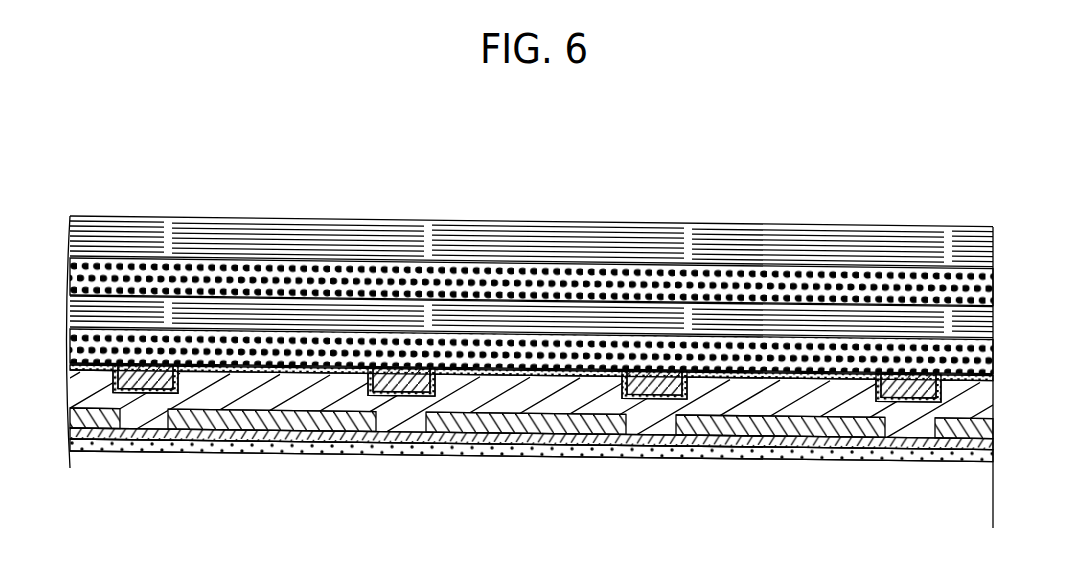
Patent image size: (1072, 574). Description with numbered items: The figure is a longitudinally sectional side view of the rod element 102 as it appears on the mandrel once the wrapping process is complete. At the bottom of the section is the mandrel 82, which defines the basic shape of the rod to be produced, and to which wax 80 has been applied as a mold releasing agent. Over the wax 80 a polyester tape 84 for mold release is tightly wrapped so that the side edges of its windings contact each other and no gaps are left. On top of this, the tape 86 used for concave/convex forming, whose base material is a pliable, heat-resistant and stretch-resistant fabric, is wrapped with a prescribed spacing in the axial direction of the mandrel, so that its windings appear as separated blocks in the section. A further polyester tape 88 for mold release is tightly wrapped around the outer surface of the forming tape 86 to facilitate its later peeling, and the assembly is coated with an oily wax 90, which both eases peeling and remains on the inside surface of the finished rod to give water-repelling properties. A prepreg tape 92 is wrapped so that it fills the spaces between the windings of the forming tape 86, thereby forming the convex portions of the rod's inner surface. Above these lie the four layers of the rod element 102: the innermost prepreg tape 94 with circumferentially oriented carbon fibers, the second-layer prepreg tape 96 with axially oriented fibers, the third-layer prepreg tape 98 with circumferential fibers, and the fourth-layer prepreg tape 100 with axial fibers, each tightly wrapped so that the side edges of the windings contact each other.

The wax 80 is at (531, 483).
The mandrel 82 is at (960, 500).
The polyester tape 84 is at (837, 430).
The tape for concave/convex forming 86 is at (531, 464).
The polyester tape 88 is at (536, 406).
The oily wax 90 is at (558, 371).
The prepreg tape 92 is at (519, 446).
The prepreg tape 94 is at (531, 277).
The prepreg tape 96 is at (531, 256).
The prepreg tape 98 is at (531, 243).
The prepreg tape 100 is at (531, 221).
The rod element 102 is at (660, 176).